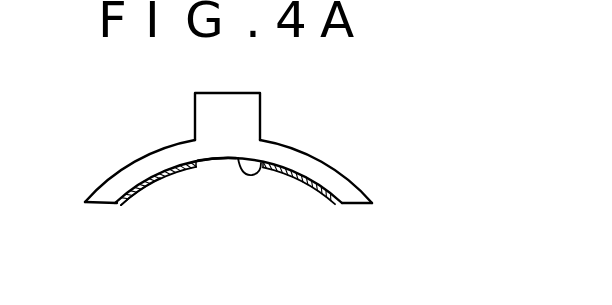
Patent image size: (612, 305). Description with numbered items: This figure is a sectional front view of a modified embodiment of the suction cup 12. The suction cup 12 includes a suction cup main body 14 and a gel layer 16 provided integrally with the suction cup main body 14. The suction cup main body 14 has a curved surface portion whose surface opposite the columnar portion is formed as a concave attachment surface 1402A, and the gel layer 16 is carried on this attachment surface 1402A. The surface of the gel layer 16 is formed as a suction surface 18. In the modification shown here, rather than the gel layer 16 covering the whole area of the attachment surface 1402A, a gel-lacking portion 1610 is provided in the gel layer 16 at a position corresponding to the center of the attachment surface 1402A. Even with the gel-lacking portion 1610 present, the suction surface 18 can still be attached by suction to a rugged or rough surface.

The suction cup 12 is at (257, 181).
The suction cup main body 14 is at (158, 151).
The gel layer 16 is at (148, 184).
The suction surface 18 is at (298, 180).
The attachment surface 1402A is at (265, 161).
The gel-lacking portion 1610 is at (216, 160).